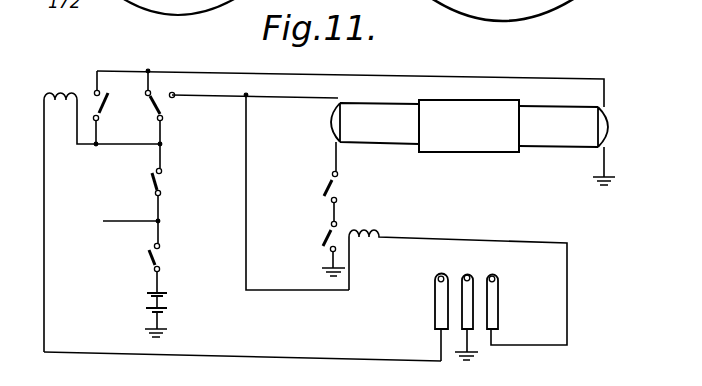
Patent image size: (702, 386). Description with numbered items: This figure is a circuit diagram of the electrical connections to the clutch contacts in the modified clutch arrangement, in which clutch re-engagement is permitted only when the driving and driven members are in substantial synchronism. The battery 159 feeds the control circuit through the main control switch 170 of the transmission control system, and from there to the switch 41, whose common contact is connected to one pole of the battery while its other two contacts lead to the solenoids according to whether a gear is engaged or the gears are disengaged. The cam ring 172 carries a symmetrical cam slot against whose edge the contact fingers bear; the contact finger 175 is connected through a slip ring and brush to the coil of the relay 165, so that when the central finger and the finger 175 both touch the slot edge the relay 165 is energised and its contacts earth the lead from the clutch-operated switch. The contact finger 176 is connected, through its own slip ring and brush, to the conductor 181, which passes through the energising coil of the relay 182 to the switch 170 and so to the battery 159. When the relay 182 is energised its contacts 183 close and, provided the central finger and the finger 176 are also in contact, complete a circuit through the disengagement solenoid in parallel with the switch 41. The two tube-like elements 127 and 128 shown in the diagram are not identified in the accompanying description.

The relay 182 is at (83, 94).
The contacts of the relay 183 is at (100, 90).
The switch 41 is at (163, 95).
The main control switch 170 is at (162, 182).
The battery 159 is at (161, 302).
The discharge tube 127 is at (370, 189).
The discharge tube 128 is at (517, 142).
The relay 165 is at (347, 231).
The cam ring 172 is at (463, 273).
The contact finger 175 is at (497, 291).
The contact finger 176 is at (435, 297).
The conductor 181 is at (288, 354).